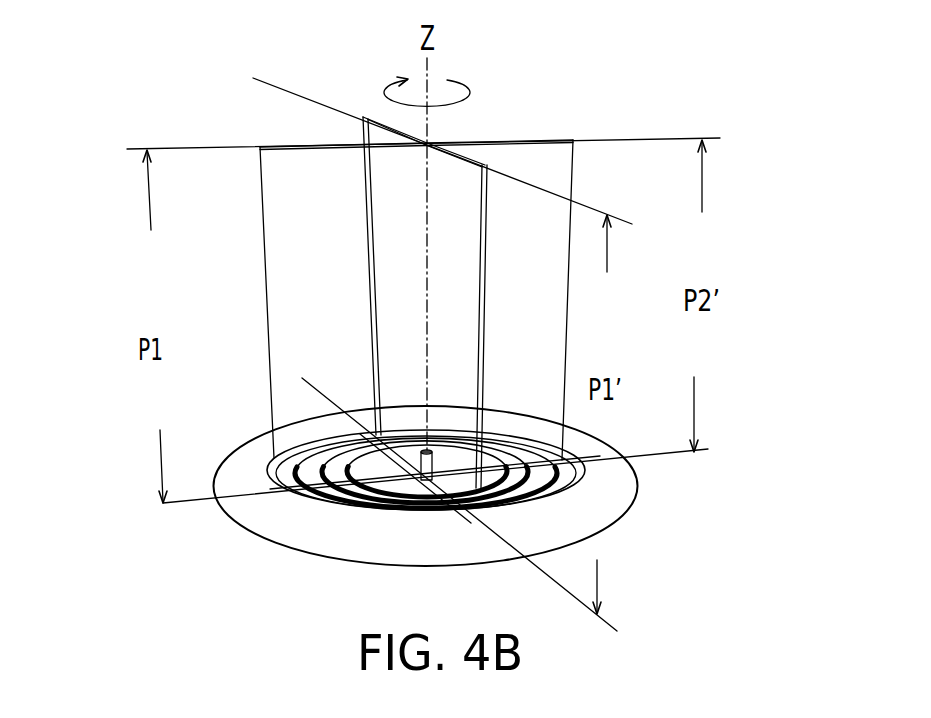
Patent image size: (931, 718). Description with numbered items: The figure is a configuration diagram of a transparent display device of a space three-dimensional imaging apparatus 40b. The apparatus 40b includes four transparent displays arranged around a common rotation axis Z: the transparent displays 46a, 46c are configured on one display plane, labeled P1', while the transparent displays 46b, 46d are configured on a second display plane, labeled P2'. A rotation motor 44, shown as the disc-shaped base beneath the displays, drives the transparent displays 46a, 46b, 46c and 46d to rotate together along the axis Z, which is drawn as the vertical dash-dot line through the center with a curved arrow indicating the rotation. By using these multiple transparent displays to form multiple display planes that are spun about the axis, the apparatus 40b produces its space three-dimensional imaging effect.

The space three-dimensional imaging apparatus 40b is at (771, 597).
The rotation motor 44 is at (278, 547).
The transparent display 46a is at (285, 145).
The transparent display 46b is at (338, 110).
The transparent display 46c is at (550, 138).
The transparent display 46d is at (367, 310).